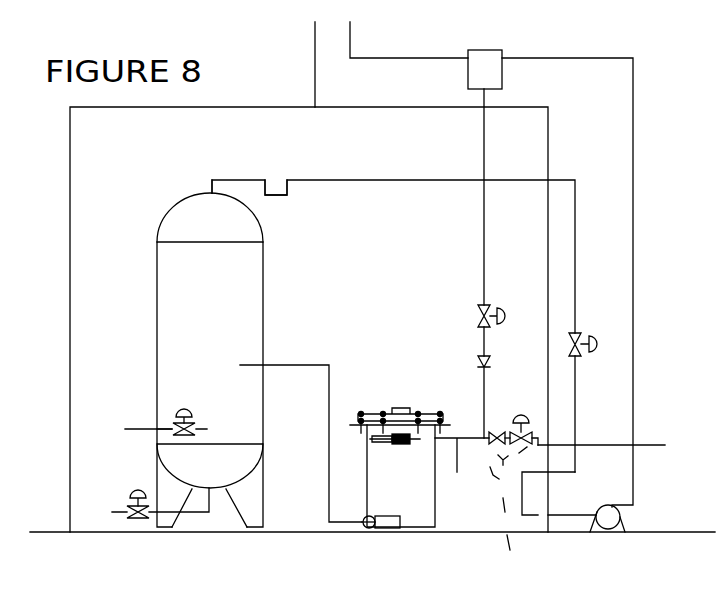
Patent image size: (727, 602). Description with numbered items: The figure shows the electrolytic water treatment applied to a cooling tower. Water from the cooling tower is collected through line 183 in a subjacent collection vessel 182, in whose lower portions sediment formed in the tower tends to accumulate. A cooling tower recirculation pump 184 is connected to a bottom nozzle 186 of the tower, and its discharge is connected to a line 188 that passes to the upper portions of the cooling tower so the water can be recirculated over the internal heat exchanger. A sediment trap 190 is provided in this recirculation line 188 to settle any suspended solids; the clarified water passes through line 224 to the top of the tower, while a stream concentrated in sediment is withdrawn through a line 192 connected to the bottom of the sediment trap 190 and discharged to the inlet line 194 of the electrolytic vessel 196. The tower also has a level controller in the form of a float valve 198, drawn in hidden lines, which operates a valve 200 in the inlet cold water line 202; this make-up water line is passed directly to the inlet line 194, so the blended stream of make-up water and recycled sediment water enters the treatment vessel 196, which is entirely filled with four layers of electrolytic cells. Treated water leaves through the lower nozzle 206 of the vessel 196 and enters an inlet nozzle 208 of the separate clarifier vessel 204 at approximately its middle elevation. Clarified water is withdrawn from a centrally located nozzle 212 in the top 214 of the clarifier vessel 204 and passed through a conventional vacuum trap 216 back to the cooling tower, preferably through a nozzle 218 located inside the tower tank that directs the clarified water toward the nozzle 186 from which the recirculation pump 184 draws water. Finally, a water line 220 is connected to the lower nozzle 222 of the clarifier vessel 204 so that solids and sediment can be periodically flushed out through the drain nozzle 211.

The collection vessel 182 is at (212, 128).
The line 183 is at (315, 50).
The recirculation pump 184 is at (613, 524).
The bottom nozzle 186 is at (560, 516).
The recirculation line 188 is at (633, 172).
The sediment trap 190 is at (485, 62).
The line 192 is at (480, 157).
The inlet line 194 is at (462, 469).
The electrolytic vessel 196 is at (418, 517).
The float valve 198 is at (508, 516).
The valve 200 is at (533, 428).
The inlet cold water line 202 is at (620, 443).
The clarifier vessel 204 is at (222, 303).
The lower nozzle 206 is at (375, 518).
The inlet nozzle 208 is at (252, 366).
The drain nozzle 211 is at (195, 513).
The centrally located nozzle 212 is at (212, 192).
The top 214 is at (195, 218).
The vacuum trap 216 is at (276, 186).
The nozzle 218 is at (538, 478).
The water line 220 is at (150, 425).
The lower nozzle 222 is at (205, 428).
The line 224 is at (352, 35).